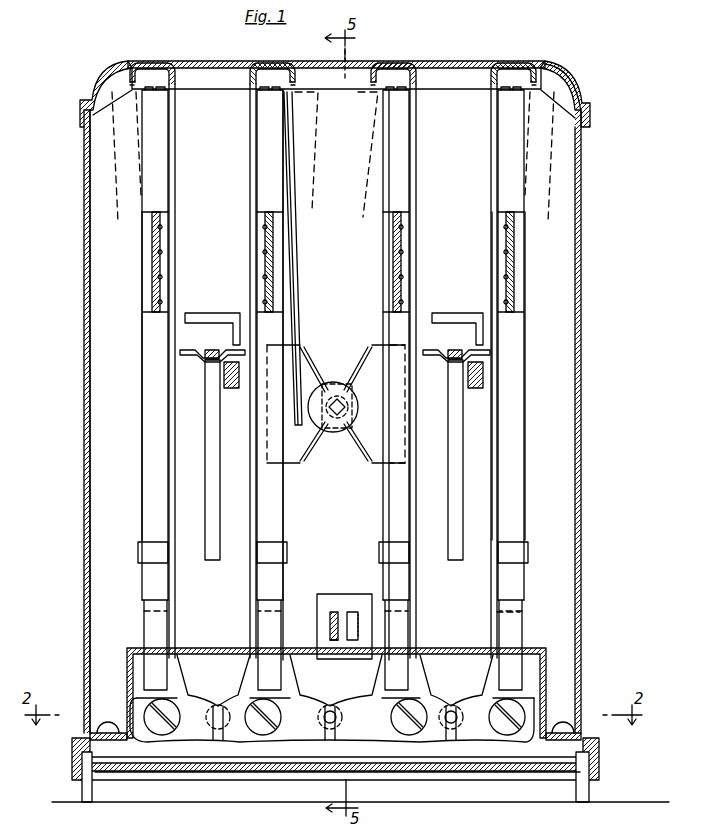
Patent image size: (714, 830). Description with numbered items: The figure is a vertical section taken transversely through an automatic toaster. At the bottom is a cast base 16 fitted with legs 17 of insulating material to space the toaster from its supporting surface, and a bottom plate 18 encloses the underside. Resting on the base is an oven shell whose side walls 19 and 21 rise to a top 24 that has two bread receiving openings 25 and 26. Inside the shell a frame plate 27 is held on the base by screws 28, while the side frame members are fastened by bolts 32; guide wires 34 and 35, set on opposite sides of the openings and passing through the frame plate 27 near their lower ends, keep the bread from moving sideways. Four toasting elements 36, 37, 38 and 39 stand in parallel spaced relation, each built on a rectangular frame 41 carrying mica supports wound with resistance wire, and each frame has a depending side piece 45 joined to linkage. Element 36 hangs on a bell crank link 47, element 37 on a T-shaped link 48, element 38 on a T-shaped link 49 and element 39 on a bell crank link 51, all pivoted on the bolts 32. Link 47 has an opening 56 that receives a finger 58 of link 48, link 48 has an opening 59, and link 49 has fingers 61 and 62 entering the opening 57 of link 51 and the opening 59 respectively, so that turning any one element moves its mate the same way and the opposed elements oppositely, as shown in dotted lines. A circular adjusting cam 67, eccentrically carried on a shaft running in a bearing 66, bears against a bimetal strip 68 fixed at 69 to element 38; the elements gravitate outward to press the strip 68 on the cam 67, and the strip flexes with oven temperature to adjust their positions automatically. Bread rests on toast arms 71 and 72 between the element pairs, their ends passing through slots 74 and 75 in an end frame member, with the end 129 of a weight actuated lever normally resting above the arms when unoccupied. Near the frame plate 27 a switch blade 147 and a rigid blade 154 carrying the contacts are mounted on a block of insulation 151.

The base 16 is at (598, 760).
The legs 17 is at (590, 788).
The bottom plate 18 is at (528, 772).
The side wall 19 is at (582, 330).
The side wall 21 is at (86, 362).
The top 24 is at (363, 62).
The bread receiving opening 25 is at (478, 52).
The bread receiving opening 26 is at (231, 52).
The frame plate 27 is at (540, 652).
The screws 28 is at (566, 720).
The bolts 32 is at (504, 727).
The wires 34 is at (498, 108).
The wires 35 is at (250, 112).
The toasting element 36 is at (541, 348).
The toasting element 37 is at (380, 323).
The toasting element 38 is at (298, 484).
The toasting element 39 is at (139, 473).
The rectangular frame 41 is at (512, 404).
The depending side piece 45 is at (510, 628).
The link 47 is at (480, 692).
The link 48 is at (368, 693).
The link 49 is at (232, 689).
The link 51 is at (189, 686).
The opening 56 is at (460, 716).
The opening 57 is at (206, 712).
The finger 58 is at (450, 706).
The opening 59 is at (340, 722).
The finger 61 is at (330, 706).
The finger 62 is at (222, 728).
The bearing 66 is at (362, 428).
The adjusting cam 67 is at (333, 385).
The strip 68 is at (300, 268).
The fixing point of strip 69 is at (290, 108).
The toast arm 71 is at (441, 364).
The toast arm 72 is at (196, 362).
The slot 74 is at (453, 432).
The slot 75 is at (208, 440).
The lever end 129 is at (208, 312).
The switch blade 147 is at (358, 612).
The block of insulation 151 is at (332, 606).
The rigid blade 154 is at (328, 623).